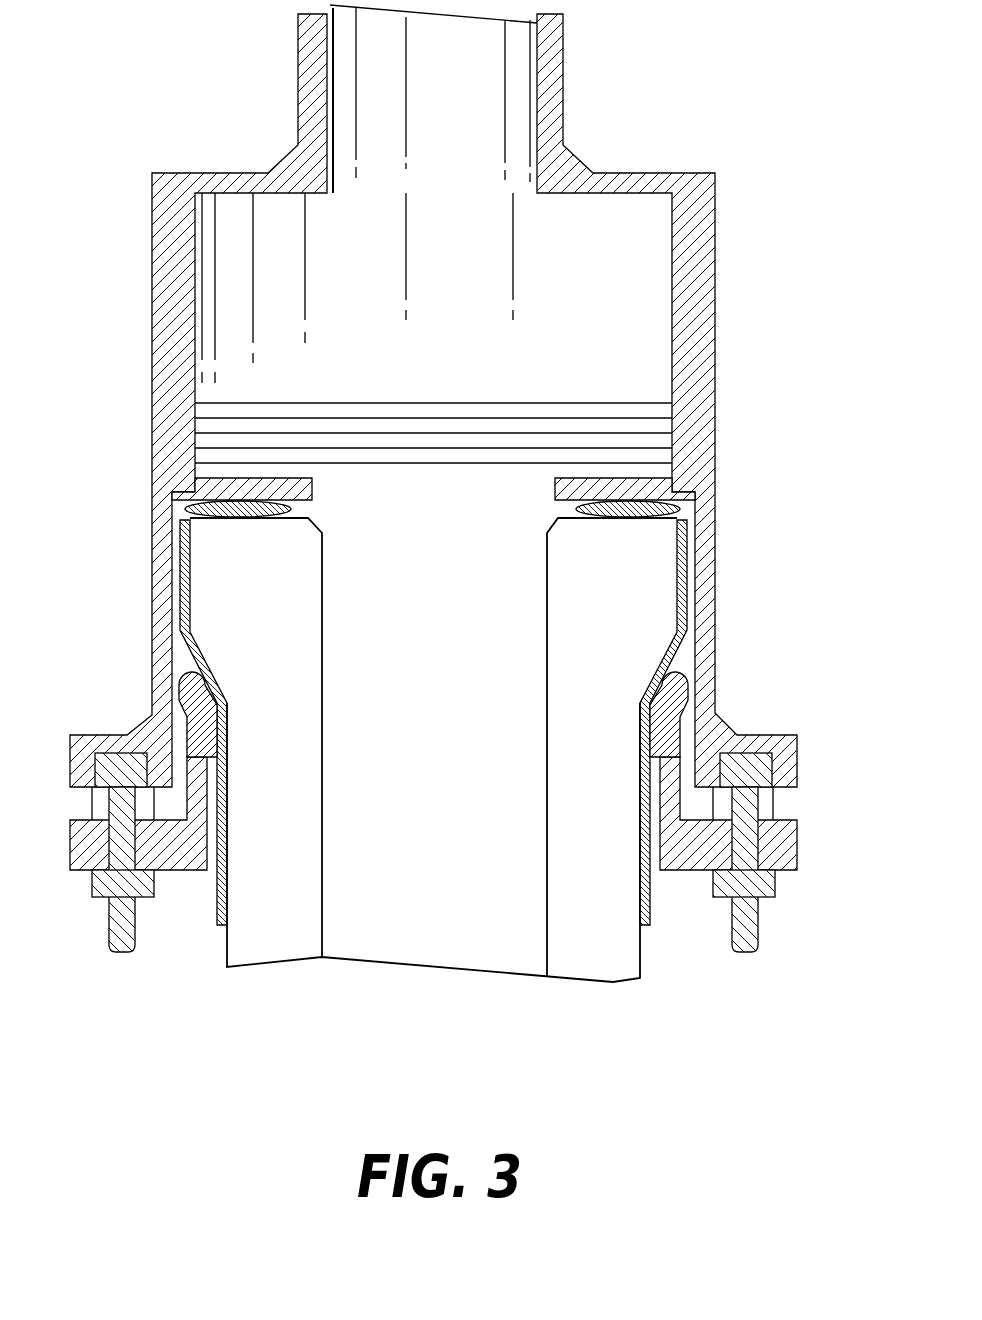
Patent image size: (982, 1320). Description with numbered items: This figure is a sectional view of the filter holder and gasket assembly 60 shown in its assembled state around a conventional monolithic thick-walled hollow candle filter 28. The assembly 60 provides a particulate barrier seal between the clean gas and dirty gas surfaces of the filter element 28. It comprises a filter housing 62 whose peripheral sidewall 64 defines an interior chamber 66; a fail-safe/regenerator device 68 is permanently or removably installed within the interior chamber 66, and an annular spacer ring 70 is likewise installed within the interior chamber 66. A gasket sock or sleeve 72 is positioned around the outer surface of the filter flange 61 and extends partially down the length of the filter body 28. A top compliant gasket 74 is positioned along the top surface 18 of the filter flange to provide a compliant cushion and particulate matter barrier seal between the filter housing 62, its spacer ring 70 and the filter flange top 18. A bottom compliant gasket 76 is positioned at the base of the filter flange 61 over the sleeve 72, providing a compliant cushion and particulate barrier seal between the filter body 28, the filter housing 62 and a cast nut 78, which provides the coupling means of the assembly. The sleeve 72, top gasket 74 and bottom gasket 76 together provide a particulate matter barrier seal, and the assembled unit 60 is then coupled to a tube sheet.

The filter holder and gasket assembly 60 is at (468, 573).
The filter housing 62 is at (432, 400).
The peripheral sidewall 64 is at (150, 322).
The interior chamber 66 is at (656, 218).
The fail-safe/regenerator device 68 is at (621, 222).
The annular spacer ring 70 is at (627, 478).
The top compliant gasket 74 is at (673, 517).
The top surface of the filter flange 18 is at (237, 512).
The gasket sock or sleeve 72 is at (685, 582).
The bottom compliant gasket 76 is at (682, 690).
The filter flange 61 is at (676, 606).
The cast nut 78 is at (797, 860).
The candle filter 28 is at (613, 1018).